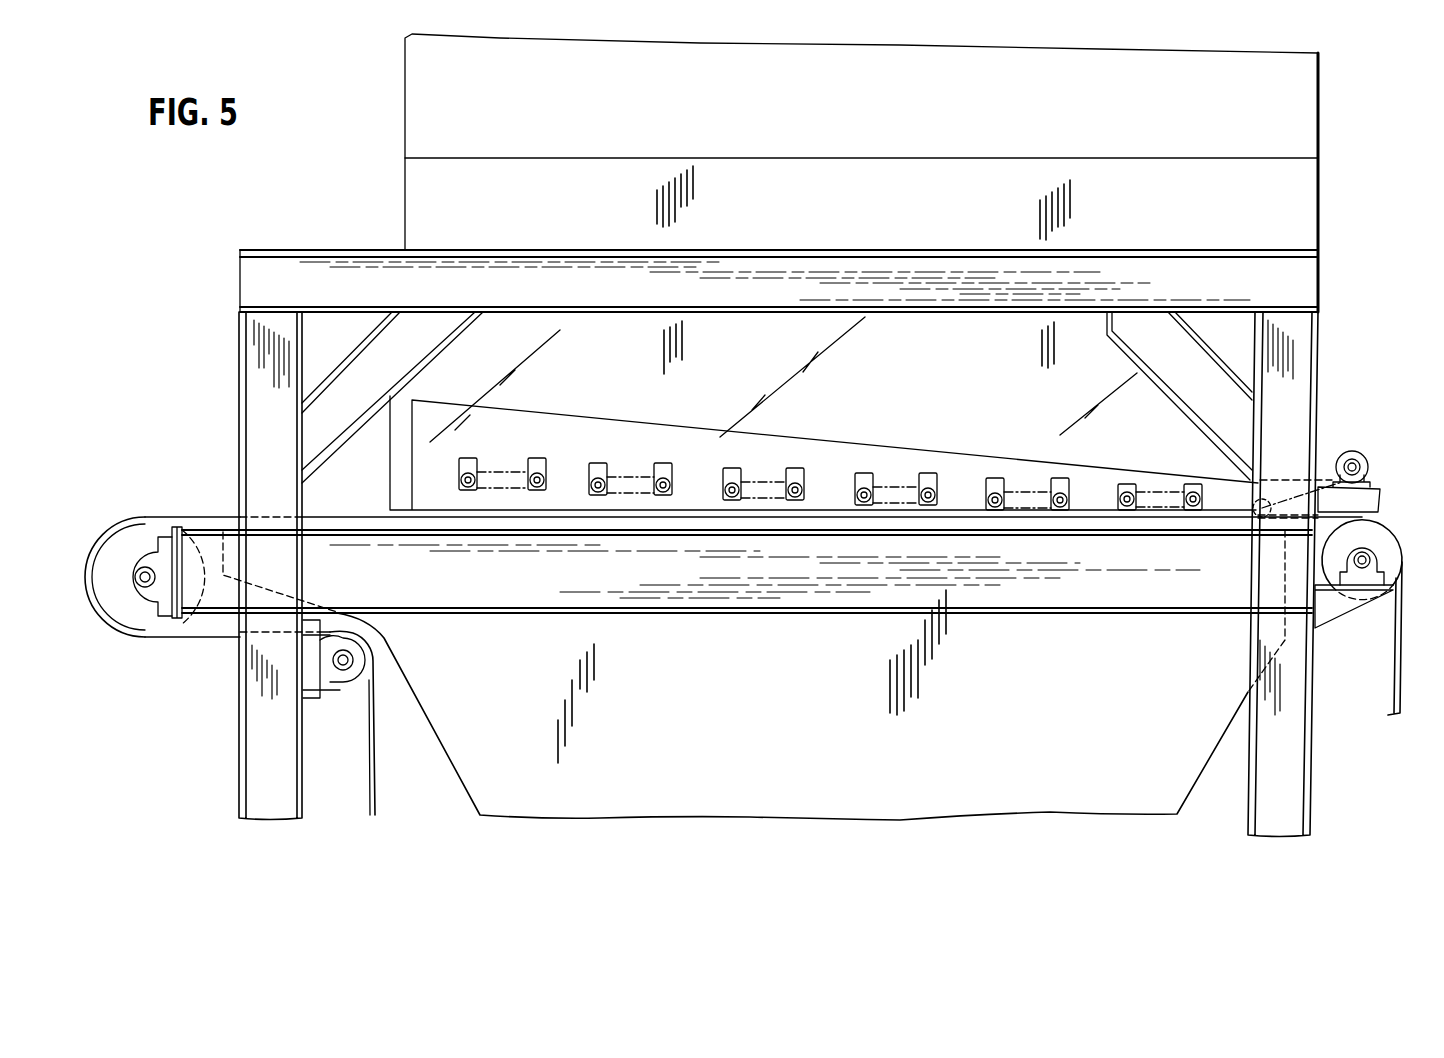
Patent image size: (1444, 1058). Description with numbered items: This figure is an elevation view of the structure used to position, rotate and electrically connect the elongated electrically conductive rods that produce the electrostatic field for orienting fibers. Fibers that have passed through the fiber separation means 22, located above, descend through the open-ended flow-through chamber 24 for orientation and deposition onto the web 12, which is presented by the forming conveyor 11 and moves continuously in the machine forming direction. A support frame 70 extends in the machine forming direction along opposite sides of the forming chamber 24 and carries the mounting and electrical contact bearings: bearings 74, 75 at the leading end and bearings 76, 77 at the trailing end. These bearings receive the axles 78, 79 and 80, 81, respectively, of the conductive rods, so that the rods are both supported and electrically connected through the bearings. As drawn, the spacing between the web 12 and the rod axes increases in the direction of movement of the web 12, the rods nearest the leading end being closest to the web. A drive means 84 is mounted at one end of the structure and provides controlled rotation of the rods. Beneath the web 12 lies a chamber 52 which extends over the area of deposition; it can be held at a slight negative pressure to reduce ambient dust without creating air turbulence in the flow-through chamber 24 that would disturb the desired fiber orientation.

The forming conveyor 11 is at (1352, 507).
The web 12 is at (345, 512).
The fiber separation means 22 is at (421, 98).
The flow-through chamber 24 is at (900, 332).
The chamber 52 is at (819, 678).
The support frame 70 is at (411, 448).
The mounting and electrical contact bearing 74 is at (469, 459).
The mounting and electrical contact bearing 75 is at (540, 459).
The mounting and electrical contact bearing 76 is at (1127, 483).
The mounting and electrical contact bearing 77 is at (1193, 483).
The axle 78 is at (460, 483).
The axle 79 is at (541, 490).
The axle 80 is at (1119, 500).
The axle 81 is at (1201, 499).
The drive means 84 is at (1365, 459).